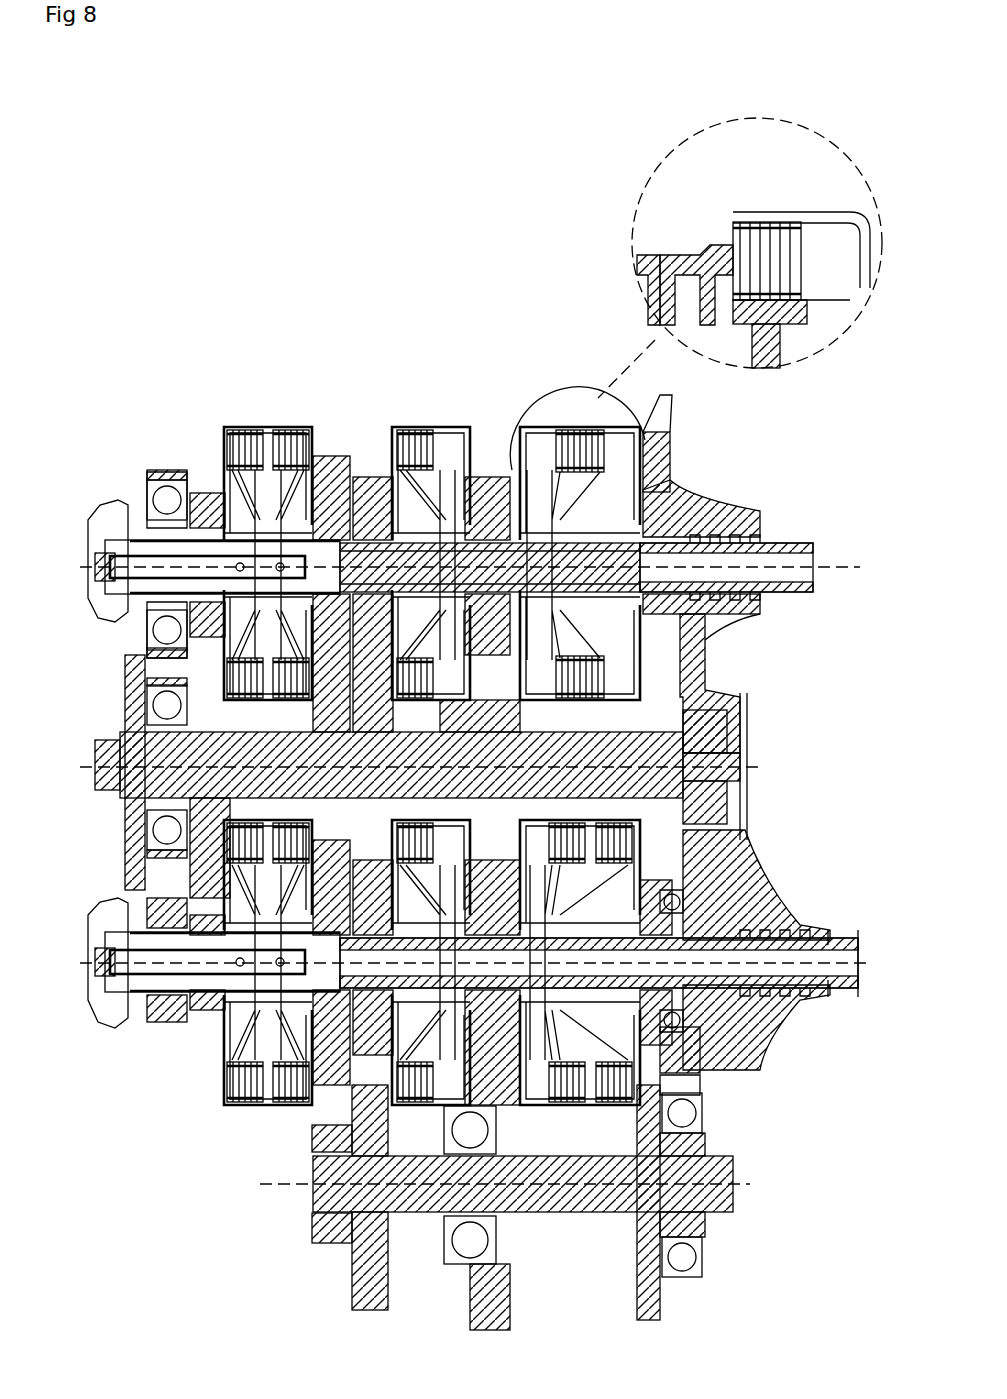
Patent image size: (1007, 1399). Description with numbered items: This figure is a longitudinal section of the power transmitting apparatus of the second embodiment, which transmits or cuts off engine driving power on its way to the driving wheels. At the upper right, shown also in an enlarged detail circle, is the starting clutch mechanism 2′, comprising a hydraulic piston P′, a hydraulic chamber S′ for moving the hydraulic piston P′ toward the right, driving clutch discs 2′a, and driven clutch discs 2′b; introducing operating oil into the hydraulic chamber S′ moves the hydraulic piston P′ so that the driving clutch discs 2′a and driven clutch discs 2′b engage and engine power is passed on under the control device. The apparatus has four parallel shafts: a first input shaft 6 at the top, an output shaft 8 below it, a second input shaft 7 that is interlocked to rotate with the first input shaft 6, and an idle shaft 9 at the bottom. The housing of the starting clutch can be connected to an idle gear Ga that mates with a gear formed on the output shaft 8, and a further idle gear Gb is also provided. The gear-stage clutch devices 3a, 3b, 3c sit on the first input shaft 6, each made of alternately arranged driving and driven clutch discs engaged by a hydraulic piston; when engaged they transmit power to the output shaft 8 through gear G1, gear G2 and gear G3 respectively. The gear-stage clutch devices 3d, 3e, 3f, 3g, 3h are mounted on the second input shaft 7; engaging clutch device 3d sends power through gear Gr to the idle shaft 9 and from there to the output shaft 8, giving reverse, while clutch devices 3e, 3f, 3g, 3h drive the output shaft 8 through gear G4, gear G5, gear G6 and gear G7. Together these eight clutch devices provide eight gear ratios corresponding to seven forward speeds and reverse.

The first input shaft 6 is at (813, 551).
The output shaft 8 is at (100, 760).
The second input shaft 7 is at (165, 995).
The idle shaft 9 is at (733, 1190).
The starting clutch mechanism 2′ is at (576, 418).
The driving clutch discs 2′a is at (750, 222).
The driven clutch discs 2′b is at (790, 222).
The hydraulic piston P′ is at (680, 258).
The hydraulic chamber S′ is at (645, 288).
The gear-stage clutch device 3a is at (420, 422).
The gear-stage clutch device 3b is at (290, 422).
The gear-stage clutch device 3c is at (246, 422).
The gear-stage clutch device 3d is at (608, 1113).
The gear-stage clutch device 3e is at (573, 1113).
The gear-stage clutch device 3f is at (415, 1112).
The gear-stage clutch device 3g is at (282, 1107).
The gear-stage clutch device 3h is at (237, 1107).
The gear G1 is at (368, 477).
The gear G2 is at (327, 455).
The gear G3 is at (205, 493).
The gear G4 is at (527, 1112).
The gear G5 is at (338, 1082).
The gear G6 is at (275, 866).
The gear G7 is at (207, 1012).
The idle gear Ga is at (484, 477).
The idle gear Gb is at (690, 1087).
The gear Gr is at (700, 868).